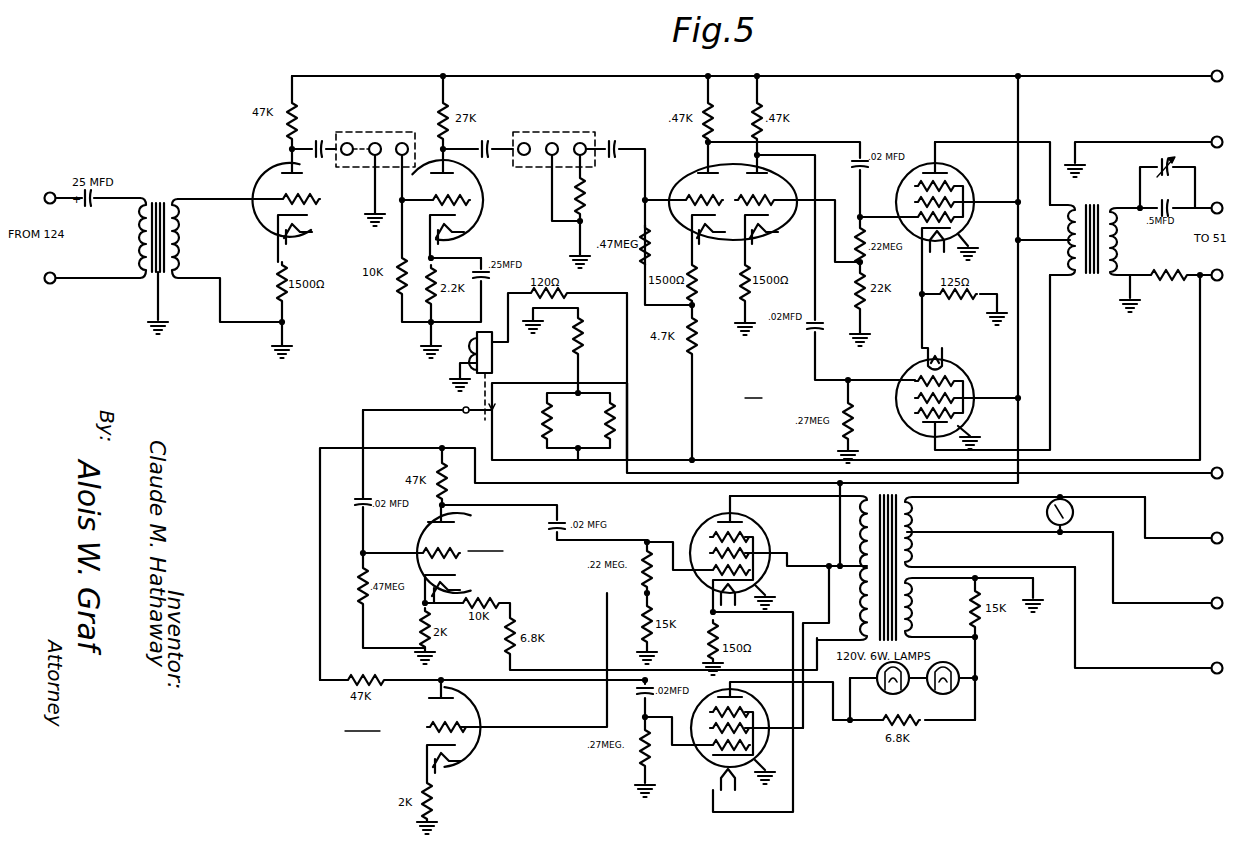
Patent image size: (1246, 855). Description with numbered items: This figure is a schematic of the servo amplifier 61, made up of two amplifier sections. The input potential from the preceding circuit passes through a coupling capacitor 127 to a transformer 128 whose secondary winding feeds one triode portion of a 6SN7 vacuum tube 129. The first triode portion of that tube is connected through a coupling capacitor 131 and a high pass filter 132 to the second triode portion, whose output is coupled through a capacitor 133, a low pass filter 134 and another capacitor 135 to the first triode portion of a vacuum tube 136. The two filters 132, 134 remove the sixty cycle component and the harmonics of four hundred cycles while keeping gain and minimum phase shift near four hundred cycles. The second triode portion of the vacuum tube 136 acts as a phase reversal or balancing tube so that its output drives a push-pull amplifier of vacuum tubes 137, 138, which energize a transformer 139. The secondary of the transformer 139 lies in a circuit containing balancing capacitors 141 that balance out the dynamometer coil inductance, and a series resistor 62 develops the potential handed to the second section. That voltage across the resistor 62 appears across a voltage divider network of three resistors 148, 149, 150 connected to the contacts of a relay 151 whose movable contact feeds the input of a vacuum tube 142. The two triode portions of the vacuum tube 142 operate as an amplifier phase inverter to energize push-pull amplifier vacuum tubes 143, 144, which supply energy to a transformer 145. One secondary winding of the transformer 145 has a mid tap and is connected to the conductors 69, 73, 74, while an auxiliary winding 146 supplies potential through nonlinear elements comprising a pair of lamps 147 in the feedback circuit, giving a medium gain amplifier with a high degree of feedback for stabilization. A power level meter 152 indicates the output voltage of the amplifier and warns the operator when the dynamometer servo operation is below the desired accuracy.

The servo amplifier 61 is at (754, 390).
The resistor 62 is at (1160, 285).
The conductor 69 is at (1160, 603).
The conductor 73 is at (1175, 538).
The conductor 74 is at (1150, 668).
The coupling capacitor 127 is at (90, 208).
The transformer 128 is at (170, 196).
The vacuum tube 129 is at (262, 210).
The coupling capacitor 131 is at (324, 140).
The high pass filter 132 is at (355, 160).
The capacitor 133 is at (487, 160).
The low pass filter 134 is at (553, 135).
The capacitor 135 is at (598, 160).
The vacuum tube 136 is at (684, 220).
The vacuum tube 137 is at (975, 214).
The vacuum tube 138 is at (904, 375).
The transformer 139 is at (1100, 202).
The balancing capacitors 141 is at (1177, 170).
The vacuum tube 142 is at (418, 530).
The vacuum tube 143 is at (700, 516).
The vacuum tube 144 is at (695, 760).
The transformer 145 is at (860, 630).
The auxiliary winding 146 is at (912, 600).
The lamps 147 is at (952, 692).
The resistor 148 is at (563, 360).
The resistor 149 is at (540, 438).
The resistor 150 is at (627, 410).
The relay 151 is at (495, 352).
The power level meter 152 is at (1074, 512).